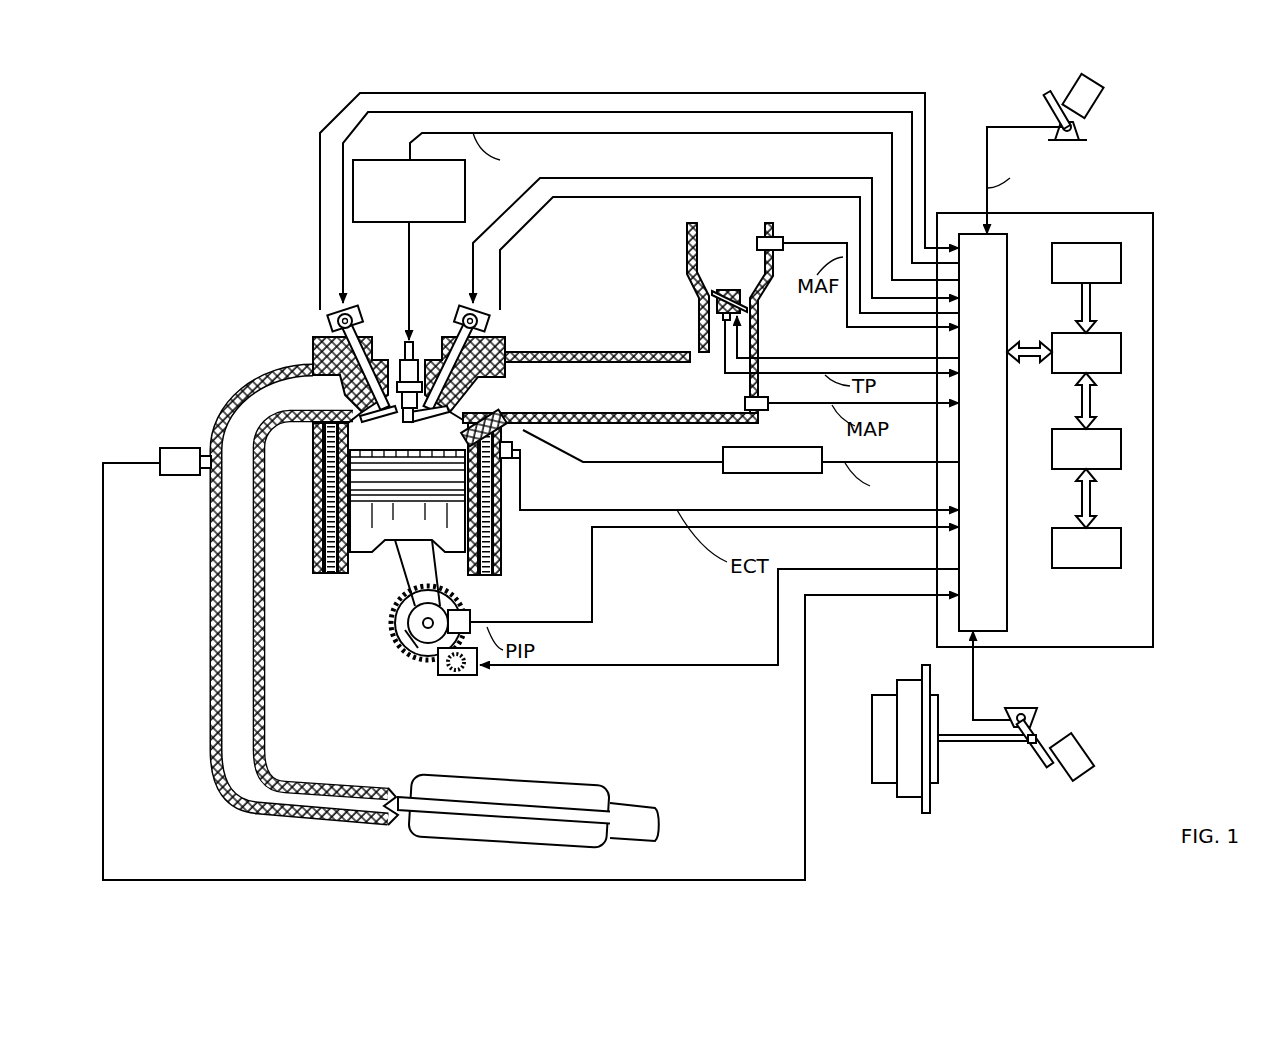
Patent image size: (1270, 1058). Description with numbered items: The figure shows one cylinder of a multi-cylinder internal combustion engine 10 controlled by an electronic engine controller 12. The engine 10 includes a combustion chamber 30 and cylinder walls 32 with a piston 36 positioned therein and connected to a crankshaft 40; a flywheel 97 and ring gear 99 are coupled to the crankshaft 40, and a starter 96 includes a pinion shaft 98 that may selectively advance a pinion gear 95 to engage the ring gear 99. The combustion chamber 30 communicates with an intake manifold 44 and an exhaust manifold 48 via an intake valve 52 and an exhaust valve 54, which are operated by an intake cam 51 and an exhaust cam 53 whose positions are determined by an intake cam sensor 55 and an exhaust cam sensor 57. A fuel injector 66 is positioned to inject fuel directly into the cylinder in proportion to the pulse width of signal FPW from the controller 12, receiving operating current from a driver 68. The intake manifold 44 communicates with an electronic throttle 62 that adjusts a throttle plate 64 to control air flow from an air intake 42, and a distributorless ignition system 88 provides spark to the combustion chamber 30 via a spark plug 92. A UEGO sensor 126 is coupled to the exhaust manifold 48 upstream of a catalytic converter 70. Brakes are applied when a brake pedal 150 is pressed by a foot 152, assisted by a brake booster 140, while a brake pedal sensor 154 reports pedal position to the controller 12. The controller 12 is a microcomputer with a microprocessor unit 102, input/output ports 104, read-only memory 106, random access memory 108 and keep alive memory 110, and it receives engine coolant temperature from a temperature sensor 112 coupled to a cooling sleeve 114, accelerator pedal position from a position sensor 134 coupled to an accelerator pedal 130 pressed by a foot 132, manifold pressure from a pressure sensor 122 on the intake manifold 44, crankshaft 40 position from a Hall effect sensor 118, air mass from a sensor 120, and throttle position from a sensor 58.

The internal combustion engine 10 is at (247, 290).
The electronic engine controller 12 is at (1153, 213).
The combustion chamber 30 is at (333, 523).
The cylinder walls 32 is at (357, 570).
The piston 36 is at (393, 540).
The crankshaft 40 is at (417, 655).
The air intake 42 is at (716, 270).
The intake manifold 44 is at (656, 400).
The exhaust manifold 48 is at (271, 407).
The intake cam 51 is at (480, 300).
The intake valve 52 is at (440, 400).
The exhaust cam 53 is at (357, 307).
The exhaust valve 54 is at (367, 403).
The intake cam sensor 55 is at (478, 330).
The exhaust cam sensor 57 is at (337, 322).
The throttle position sensor 58 is at (712, 318).
The electronic throttle 62 is at (742, 297).
The throttle plate 64 is at (717, 296).
The fuel injector 66 is at (507, 430).
The driver 68 is at (750, 473).
The catalytic converter 70 is at (432, 775).
The distributorless ignition system 88 is at (368, 160).
The spark plug 92 is at (411, 340).
The pinion gear 95 is at (459, 673).
The starter 96 is at (470, 678).
The flywheel 97 is at (403, 627).
The pinion shaft 98 is at (460, 670).
The ring gear 99 is at (427, 663).
The microprocessor unit 102 is at (1121, 346).
The input/output ports 104 is at (1008, 242).
The read-only memory 106 is at (1121, 257).
The random access memory 108 is at (1121, 442).
The keep alive memory 110 is at (1121, 545).
The temperature sensor 112 is at (512, 458).
The cooling sleeve 114 is at (487, 530).
The Hall effect sensor 118 is at (473, 603).
The air mass sensor 120 is at (775, 237).
The pressure sensor 122 is at (762, 412).
The UEGO sensor 126 is at (160, 452).
The accelerator pedal 130 is at (1102, 146).
The foot 132 is at (1100, 88).
The position sensor 134 is at (1085, 134).
The brake booster 140 is at (873, 785).
The brake pedal 150 is at (1033, 712).
The foot 152 is at (1078, 738).
The brake pedal sensor 154 is at (1015, 715).